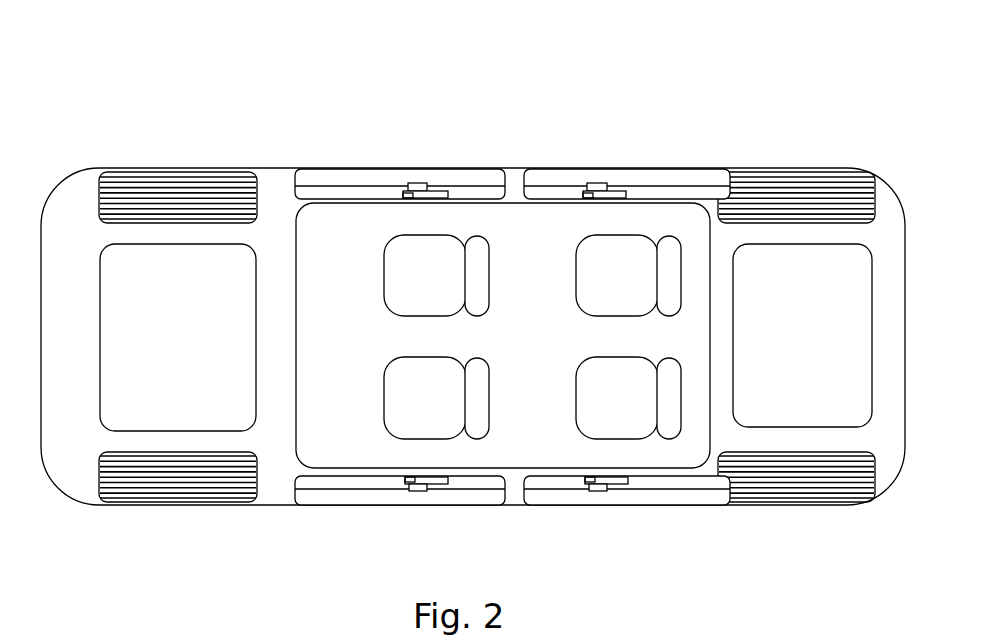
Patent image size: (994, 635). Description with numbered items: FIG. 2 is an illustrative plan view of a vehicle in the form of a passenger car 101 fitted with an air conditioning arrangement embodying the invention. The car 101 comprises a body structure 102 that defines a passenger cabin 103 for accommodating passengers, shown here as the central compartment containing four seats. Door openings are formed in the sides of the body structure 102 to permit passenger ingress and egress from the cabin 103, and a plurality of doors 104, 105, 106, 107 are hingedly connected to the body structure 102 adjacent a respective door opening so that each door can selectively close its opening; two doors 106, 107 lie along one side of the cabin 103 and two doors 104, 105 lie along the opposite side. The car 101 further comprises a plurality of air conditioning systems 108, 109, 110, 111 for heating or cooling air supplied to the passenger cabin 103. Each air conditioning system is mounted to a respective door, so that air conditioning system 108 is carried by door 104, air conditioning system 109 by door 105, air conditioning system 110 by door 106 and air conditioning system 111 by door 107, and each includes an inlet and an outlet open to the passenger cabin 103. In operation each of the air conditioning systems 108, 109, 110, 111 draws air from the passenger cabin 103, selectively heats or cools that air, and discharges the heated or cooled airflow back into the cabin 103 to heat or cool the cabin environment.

The passenger car 101 is at (473, 298).
The body structure 102 is at (269, 168).
The passenger cabin 103 is at (550, 351).
The door 104 is at (337, 500).
The door 105 is at (692, 500).
The door 106 is at (325, 178).
The door 107 is at (687, 178).
The air conditioning system 108 is at (420, 491).
The air conditioning system 109 is at (598, 491).
The air conditioning system 110 is at (419, 183).
The air conditioning system 111 is at (597, 183).